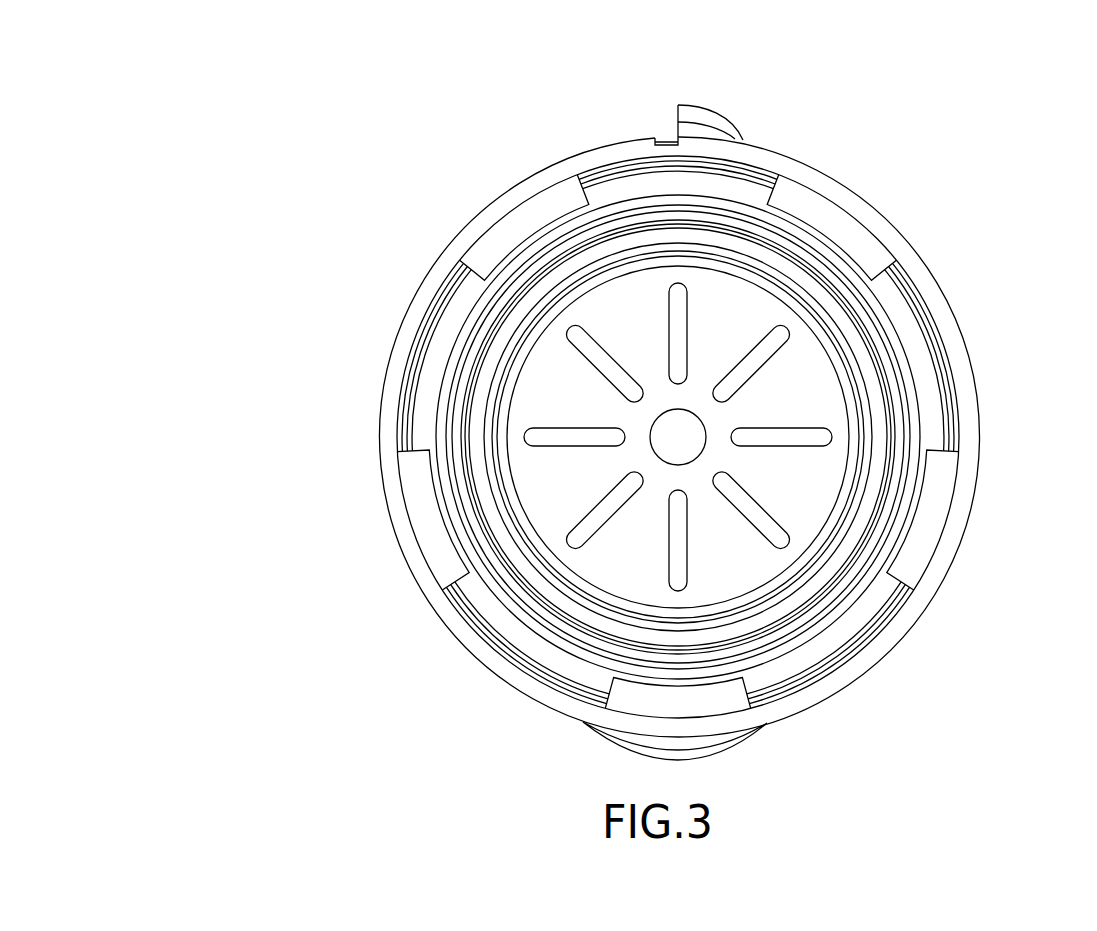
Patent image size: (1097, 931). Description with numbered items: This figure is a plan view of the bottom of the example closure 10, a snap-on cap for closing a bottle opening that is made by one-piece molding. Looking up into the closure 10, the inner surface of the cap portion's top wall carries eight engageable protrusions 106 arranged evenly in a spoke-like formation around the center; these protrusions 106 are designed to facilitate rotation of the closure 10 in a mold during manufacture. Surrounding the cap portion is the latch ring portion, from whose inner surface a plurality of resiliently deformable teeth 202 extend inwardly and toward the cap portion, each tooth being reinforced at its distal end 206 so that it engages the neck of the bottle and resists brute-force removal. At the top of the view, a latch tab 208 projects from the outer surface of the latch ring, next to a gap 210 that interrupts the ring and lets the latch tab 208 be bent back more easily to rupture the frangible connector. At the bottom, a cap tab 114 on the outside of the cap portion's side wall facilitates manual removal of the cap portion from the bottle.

The closure 10 is at (303, 188).
The engageable protrusions 106 is at (770, 352).
The cap tab 114 is at (655, 745).
The resiliently deformable teeth 202 is at (940, 497).
The distal end 206 is at (928, 448).
The latch tab 208 is at (708, 120).
The gap 210 is at (662, 137).